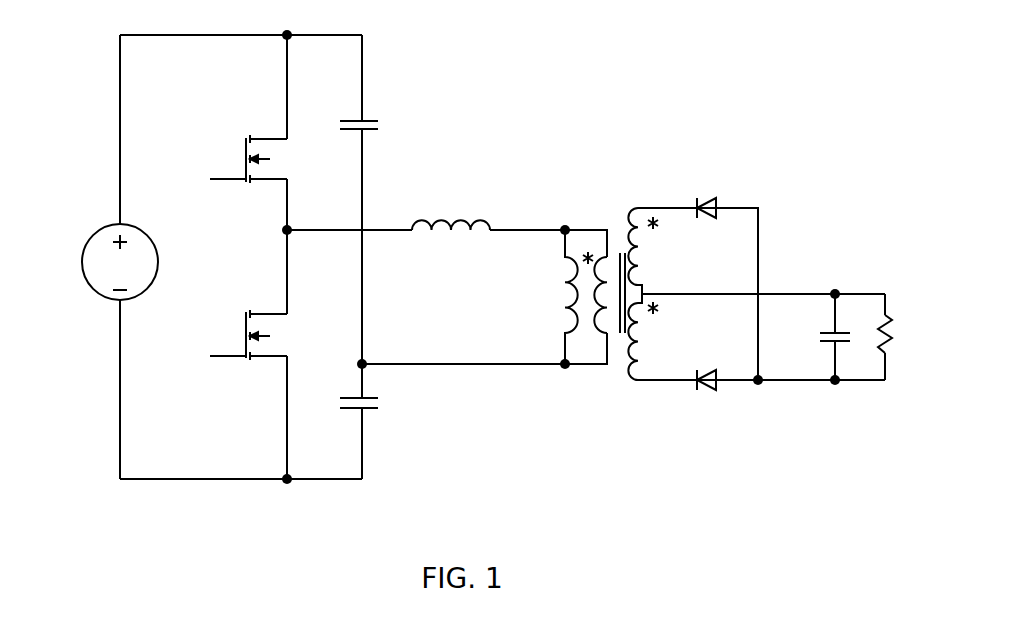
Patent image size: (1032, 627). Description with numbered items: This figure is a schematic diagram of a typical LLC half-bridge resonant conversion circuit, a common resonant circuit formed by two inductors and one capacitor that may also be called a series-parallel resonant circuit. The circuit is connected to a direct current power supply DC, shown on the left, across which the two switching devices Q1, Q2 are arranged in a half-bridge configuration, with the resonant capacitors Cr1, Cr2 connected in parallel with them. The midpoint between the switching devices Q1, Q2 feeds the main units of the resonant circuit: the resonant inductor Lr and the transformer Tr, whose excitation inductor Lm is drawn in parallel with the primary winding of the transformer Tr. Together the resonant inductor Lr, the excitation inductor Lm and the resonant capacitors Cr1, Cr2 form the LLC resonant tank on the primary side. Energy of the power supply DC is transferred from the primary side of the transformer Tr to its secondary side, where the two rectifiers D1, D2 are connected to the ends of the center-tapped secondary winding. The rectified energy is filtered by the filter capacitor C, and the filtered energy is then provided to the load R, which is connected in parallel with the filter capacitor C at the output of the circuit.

The direct current power supply DC is at (88, 262).
The switching device Q1 is at (248, 131).
The switching device Q2 is at (248, 360).
The resonant capacitor Cr1 is at (386, 125).
The resonant capacitor Cr2 is at (387, 403).
The resonant inductor Lr is at (451, 202).
The excitation inductor Lm is at (542, 297).
The transformer Tr is at (620, 277).
The rectifier D1 is at (712, 187).
The rectifier D2 is at (712, 400).
The filter capacitor C is at (818, 337).
The load R is at (903, 334).